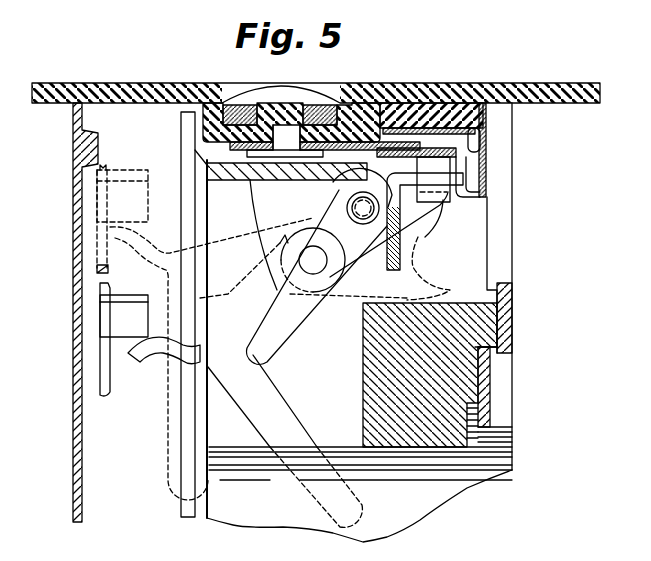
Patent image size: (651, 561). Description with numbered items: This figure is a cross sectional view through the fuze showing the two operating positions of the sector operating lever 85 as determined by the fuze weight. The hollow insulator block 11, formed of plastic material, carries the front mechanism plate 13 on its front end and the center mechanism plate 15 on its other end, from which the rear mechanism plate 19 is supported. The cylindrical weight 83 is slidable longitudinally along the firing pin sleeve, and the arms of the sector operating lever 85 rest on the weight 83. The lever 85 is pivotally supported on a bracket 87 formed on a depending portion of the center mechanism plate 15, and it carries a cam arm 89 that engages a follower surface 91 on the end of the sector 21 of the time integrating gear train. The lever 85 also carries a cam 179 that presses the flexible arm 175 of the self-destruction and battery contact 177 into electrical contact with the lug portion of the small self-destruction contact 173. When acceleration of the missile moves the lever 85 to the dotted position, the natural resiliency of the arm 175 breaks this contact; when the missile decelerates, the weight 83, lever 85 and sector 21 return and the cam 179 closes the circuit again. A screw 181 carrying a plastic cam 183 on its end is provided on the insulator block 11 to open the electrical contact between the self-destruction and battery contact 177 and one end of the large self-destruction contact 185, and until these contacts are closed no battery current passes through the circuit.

The insulator block 11 is at (567, 93).
The front mechanism plate 13 is at (512, 322).
The center mechanism plate 15 is at (185, 171).
The rear mechanism plate 19 is at (72, 188).
The sector 21 is at (97, 268).
The cylindrical weight 83 is at (385, 352).
The sector operating lever 85 is at (258, 396).
The bracket 87 is at (268, 202).
The cam arm 89 is at (147, 234).
The follower surface 91 is at (128, 202).
The small self-destruction contact 173 is at (343, 281).
The flexible arm 175 is at (449, 196).
The self-destruction and battery contact 177 is at (476, 147).
The cam 179 is at (418, 219).
The screw 181 is at (263, 90).
The plastic cam 183 is at (373, 110).
The large self-destruction contact 185 is at (484, 196).